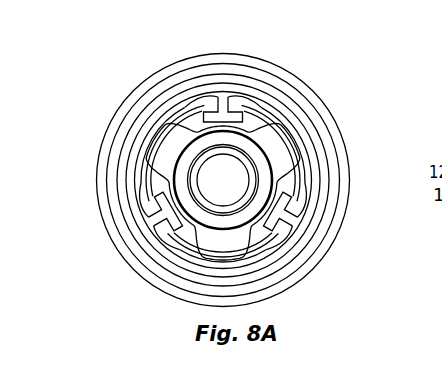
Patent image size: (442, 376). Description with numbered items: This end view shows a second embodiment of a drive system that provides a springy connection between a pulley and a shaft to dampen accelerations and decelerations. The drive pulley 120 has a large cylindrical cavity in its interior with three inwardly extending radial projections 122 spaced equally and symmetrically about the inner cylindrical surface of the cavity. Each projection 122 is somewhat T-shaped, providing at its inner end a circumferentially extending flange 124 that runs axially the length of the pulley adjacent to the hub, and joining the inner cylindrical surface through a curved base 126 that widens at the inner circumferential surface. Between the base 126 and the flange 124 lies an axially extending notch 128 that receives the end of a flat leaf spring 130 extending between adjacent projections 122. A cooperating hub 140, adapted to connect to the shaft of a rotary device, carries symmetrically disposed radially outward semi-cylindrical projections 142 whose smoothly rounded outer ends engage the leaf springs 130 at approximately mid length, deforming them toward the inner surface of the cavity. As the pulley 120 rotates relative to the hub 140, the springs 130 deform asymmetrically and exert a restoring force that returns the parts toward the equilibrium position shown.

The drive pulley 120 is at (316, 104).
The radial projections 122 is at (223, 115).
The circumferentially extending flange 124 is at (160, 185).
The curved base 126 is at (290, 225).
The axially extending notch 128 is at (277, 260).
The flat leaf spring 130 is at (165, 112).
The hub 140 is at (275, 175).
The semi-cylindrical projections 142 is at (158, 138).